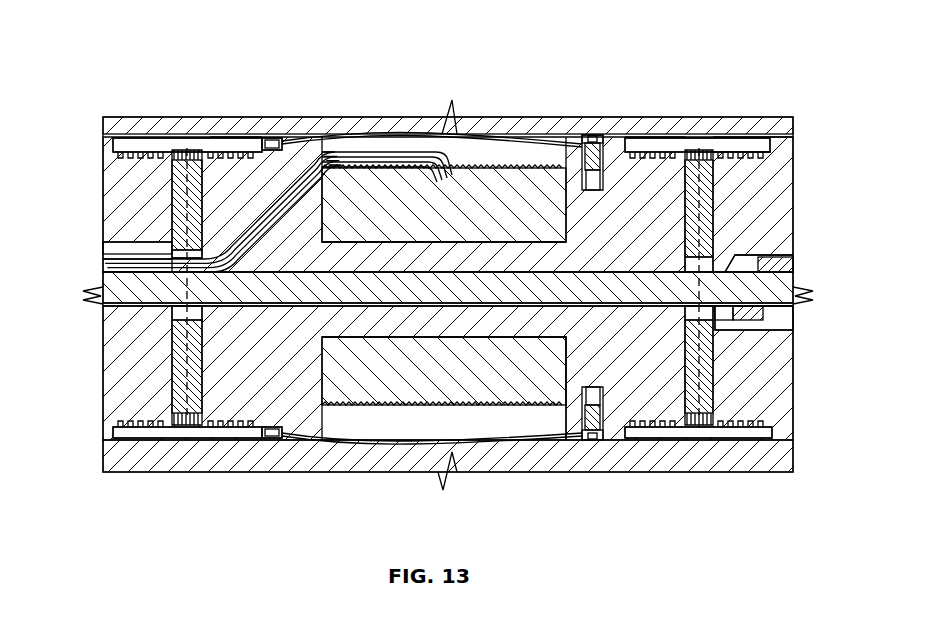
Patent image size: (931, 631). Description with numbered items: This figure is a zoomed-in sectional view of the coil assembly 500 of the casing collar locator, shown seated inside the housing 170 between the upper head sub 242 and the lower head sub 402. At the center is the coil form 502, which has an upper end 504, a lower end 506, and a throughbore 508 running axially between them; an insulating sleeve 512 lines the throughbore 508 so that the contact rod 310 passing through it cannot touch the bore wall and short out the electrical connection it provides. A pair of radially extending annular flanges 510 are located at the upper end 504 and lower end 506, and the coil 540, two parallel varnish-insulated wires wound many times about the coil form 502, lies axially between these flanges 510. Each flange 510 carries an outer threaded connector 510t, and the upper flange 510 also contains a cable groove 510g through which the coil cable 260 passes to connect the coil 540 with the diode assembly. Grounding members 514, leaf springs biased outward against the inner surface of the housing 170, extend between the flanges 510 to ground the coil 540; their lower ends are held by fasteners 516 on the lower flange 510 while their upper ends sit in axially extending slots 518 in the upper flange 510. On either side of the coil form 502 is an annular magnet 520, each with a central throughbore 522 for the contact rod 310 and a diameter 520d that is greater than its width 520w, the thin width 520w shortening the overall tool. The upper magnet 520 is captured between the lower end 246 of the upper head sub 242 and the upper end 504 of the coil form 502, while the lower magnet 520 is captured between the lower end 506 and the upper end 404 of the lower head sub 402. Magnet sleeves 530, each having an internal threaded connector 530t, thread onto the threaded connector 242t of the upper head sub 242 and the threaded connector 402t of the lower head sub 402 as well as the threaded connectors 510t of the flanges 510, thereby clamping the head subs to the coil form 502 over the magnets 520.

The coil assembly 500 is at (135, 25).
The housing 170 is at (545, 128).
The annular flange 510 is at (253, 137).
The cable groove 510g is at (323, 205).
The threaded connector 510t is at (210, 160).
The insulating sleeve 512 is at (605, 268).
The magnet sleeve 530 is at (105, 137).
The threaded connector 530t is at (145, 138).
The slot 518 is at (293, 137).
The grounding member 514 is at (473, 130).
The coil 540 is at (337, 385).
The fastener 516 is at (590, 133).
The coil cable 260 is at (440, 155).
The upper head sub 242 is at (117, 233).
The threaded connector 242t is at (165, 172).
The lower end 246 is at (172, 196).
The central throughbore 522 is at (103, 274).
The contact rod 310 is at (762, 292).
The annular magnet 520 is at (178, 358).
The diameter 520d is at (175, 322).
The width 520w is at (198, 183).
The lower head sub 402 is at (780, 158).
The threaded connector 402t is at (750, 178).
The upper end 404 is at (775, 258).
The upper end 504 is at (202, 360).
The lower end 506 is at (683, 390).
The throughbore 508 is at (575, 308).
The coil form 502 is at (622, 445).